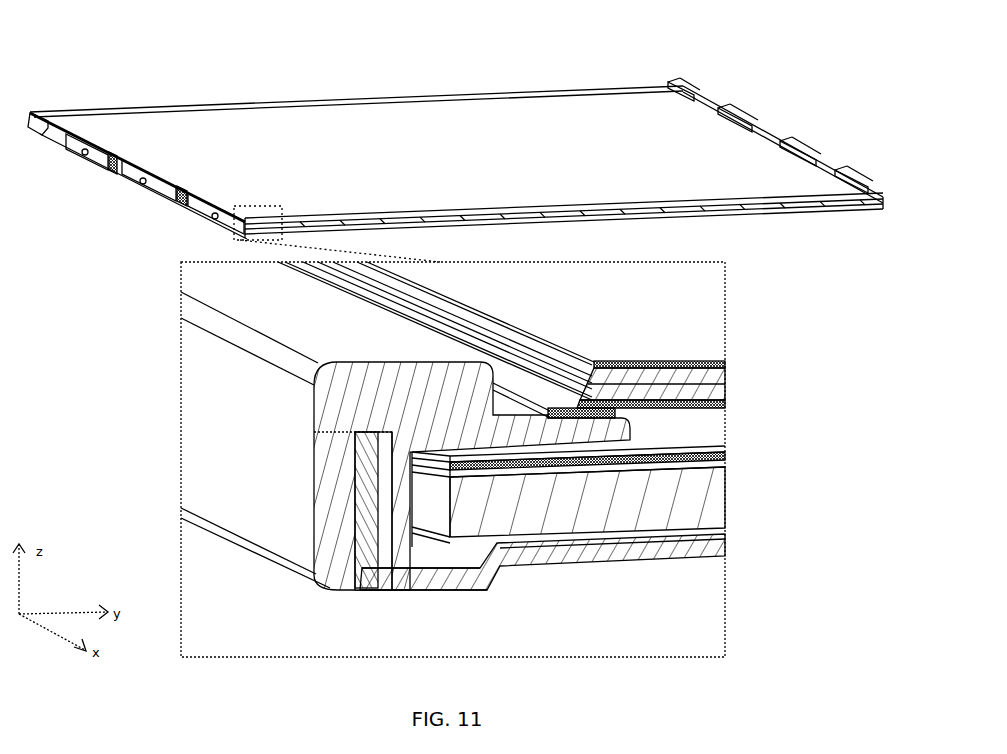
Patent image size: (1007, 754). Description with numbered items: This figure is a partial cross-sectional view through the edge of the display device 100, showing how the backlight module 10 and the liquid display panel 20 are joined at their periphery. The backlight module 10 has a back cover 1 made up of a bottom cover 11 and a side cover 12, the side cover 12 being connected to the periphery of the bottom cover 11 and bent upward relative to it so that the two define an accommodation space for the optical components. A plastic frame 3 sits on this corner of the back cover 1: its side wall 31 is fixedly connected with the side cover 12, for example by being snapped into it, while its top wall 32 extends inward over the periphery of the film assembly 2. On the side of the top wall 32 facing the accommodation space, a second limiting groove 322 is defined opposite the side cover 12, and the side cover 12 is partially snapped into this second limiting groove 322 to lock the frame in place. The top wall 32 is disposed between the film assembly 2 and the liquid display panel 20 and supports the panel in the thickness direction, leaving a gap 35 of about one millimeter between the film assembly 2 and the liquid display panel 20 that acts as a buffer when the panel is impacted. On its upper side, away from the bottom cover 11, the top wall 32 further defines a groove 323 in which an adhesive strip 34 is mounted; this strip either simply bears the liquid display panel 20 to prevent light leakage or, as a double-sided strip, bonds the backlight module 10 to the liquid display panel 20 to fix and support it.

The display device 100 is at (63, 58).
The backlight module 10 is at (733, 505).
The back cover 1 is at (504, 594).
The bottom cover 11 is at (407, 591).
The side cover 12 is at (358, 585).
The film assembly 2 is at (718, 452).
The liquid display panel 20 is at (714, 386).
The plastic frame 3 is at (226, 550).
The side wall 31 is at (276, 539).
The top wall 32 is at (428, 375).
The second limiting groove 322 is at (381, 428).
The groove 323 is at (556, 406).
The adhesive strip 34 is at (596, 386).
The gap 35 is at (694, 427).